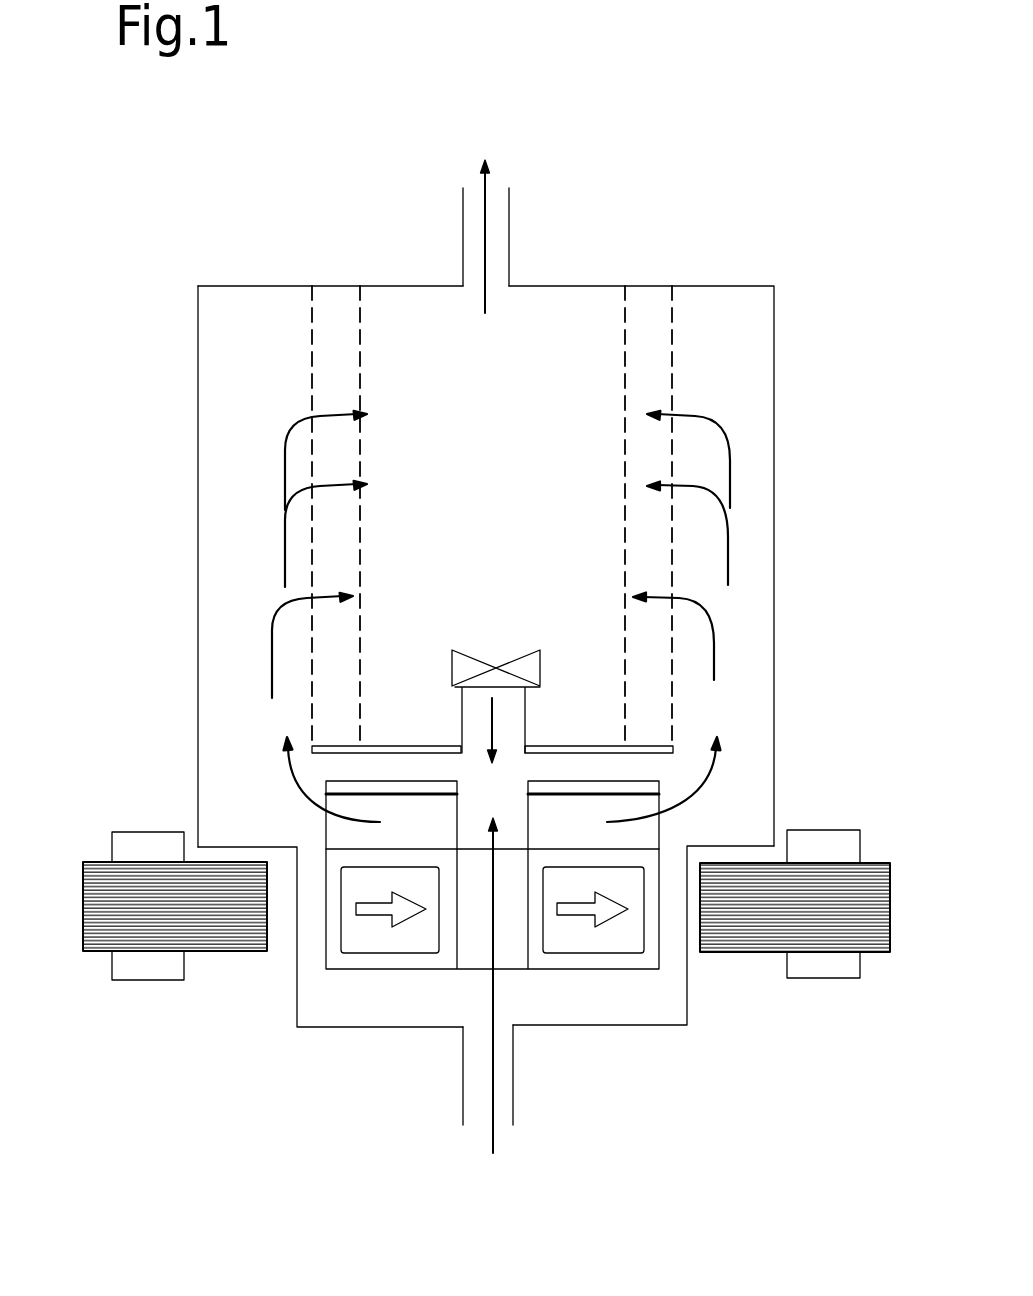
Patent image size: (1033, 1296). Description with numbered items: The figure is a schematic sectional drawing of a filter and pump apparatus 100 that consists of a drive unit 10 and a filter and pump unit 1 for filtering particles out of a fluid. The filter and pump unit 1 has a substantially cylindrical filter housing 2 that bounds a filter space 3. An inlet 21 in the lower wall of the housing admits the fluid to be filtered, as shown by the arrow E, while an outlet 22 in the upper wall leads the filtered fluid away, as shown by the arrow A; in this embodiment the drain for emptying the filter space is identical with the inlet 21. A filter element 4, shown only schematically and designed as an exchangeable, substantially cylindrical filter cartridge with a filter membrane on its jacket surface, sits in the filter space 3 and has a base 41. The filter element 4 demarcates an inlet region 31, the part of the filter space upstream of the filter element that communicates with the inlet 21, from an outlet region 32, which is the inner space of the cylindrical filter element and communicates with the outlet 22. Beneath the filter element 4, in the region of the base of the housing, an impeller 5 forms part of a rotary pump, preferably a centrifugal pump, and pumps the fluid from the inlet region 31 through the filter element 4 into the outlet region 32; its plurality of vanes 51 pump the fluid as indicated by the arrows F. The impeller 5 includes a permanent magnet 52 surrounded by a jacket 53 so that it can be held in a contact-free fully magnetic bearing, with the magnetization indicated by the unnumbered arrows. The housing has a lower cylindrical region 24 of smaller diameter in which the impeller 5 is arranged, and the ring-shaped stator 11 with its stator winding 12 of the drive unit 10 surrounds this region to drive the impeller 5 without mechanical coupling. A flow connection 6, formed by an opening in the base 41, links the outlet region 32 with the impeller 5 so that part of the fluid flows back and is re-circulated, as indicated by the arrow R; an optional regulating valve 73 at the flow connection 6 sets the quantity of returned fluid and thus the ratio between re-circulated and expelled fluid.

The filter and pump apparatus 100 is at (428, 121).
The filter and pump unit 1 is at (722, 270).
The filter housing 2 is at (198, 480).
The filter space 3 is at (267, 379).
The filter element 4 is at (328, 317).
The impeller 5 is at (368, 963).
The flow connection 6 is at (507, 725).
The drive unit 10 is at (143, 990).
The stator 11 is at (93, 905).
The stator winding 12 is at (130, 830).
The inlet 21 is at (513, 1049).
The outlet 22 is at (510, 267).
The cylindrical region 24 is at (295, 1002).
The inlet region 31 is at (243, 640).
The outlet region 32 is at (418, 320).
The base 41 is at (427, 747).
The vanes 51 is at (340, 837).
The permanent magnet 52 is at (408, 943).
The jacket 53 is at (650, 958).
The regulating valve 73 is at (542, 670).
The arrow A is at (487, 222).
The arrow E is at (494, 1082).
The arrow R is at (492, 727).
The arrows F is at (725, 448).